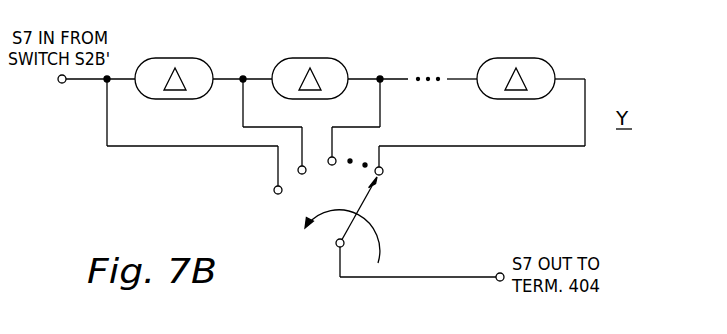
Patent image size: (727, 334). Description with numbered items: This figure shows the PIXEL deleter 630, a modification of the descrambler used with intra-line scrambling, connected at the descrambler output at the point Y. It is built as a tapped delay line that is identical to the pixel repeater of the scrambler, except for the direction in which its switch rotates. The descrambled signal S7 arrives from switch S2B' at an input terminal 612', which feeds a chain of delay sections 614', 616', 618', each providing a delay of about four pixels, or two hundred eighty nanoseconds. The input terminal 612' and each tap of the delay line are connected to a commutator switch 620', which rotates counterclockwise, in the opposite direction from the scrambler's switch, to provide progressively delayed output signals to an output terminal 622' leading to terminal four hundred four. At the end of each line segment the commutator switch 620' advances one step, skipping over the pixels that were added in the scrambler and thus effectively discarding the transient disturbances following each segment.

The input terminal 612' is at (84, 108).
The delay section 614' is at (173, 100).
The delay section 616' is at (302, 90).
The delay section 618' is at (499, 99).
The commutator switch 620' is at (374, 220).
The output terminal 622' is at (422, 283).
The pixel deleter 630 is at (418, 41).